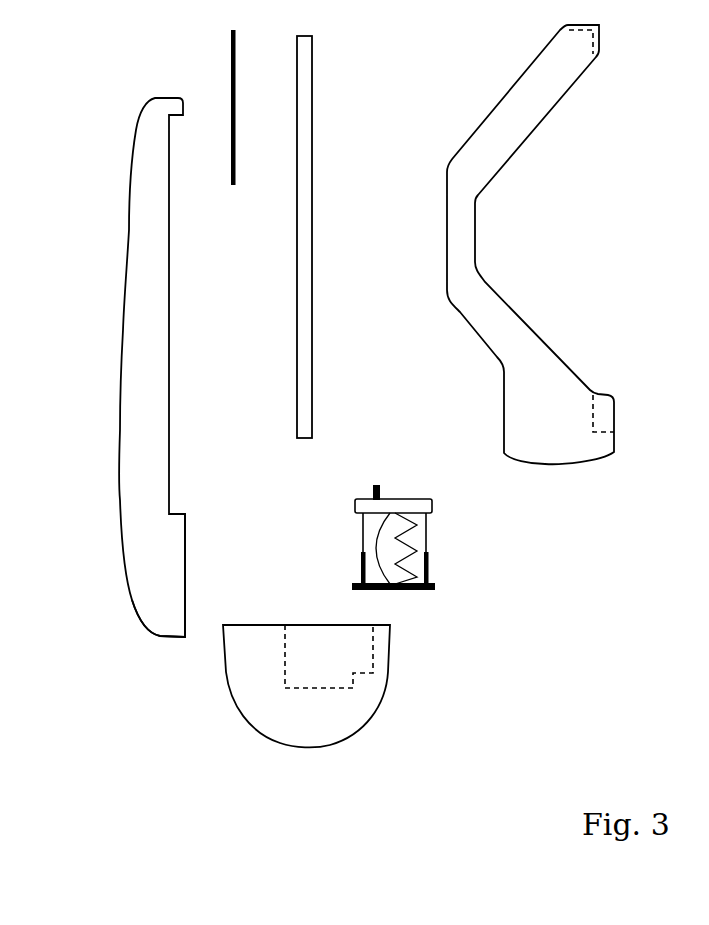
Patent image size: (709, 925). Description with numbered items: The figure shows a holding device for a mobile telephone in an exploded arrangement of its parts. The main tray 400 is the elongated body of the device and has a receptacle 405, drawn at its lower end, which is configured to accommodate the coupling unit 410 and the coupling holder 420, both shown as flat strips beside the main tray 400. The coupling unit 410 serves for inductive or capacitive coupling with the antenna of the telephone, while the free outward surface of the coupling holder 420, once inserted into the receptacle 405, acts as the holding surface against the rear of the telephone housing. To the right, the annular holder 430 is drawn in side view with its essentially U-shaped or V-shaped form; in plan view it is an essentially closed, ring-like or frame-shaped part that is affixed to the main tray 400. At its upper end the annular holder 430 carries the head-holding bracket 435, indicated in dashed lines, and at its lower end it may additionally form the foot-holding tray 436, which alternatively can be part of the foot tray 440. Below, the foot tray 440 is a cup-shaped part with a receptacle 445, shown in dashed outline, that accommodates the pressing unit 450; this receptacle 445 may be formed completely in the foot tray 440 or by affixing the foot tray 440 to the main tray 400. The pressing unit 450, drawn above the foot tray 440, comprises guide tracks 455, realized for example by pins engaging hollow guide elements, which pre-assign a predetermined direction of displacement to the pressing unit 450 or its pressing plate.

The main tray 400 is at (106, 363).
The receptacle 405 is at (176, 575).
The coupling unit 410 is at (216, 56).
The coupling holder 420 is at (323, 104).
The annular holder 430 is at (494, 235).
The head-holding bracket 435 is at (609, 37).
The foot-holding tray 436 is at (624, 413).
The foot tray 440 is at (355, 722).
The receptacle 445 is at (353, 650).
The pressing unit 450 is at (454, 538).
The guide tracks 455 is at (439, 571).